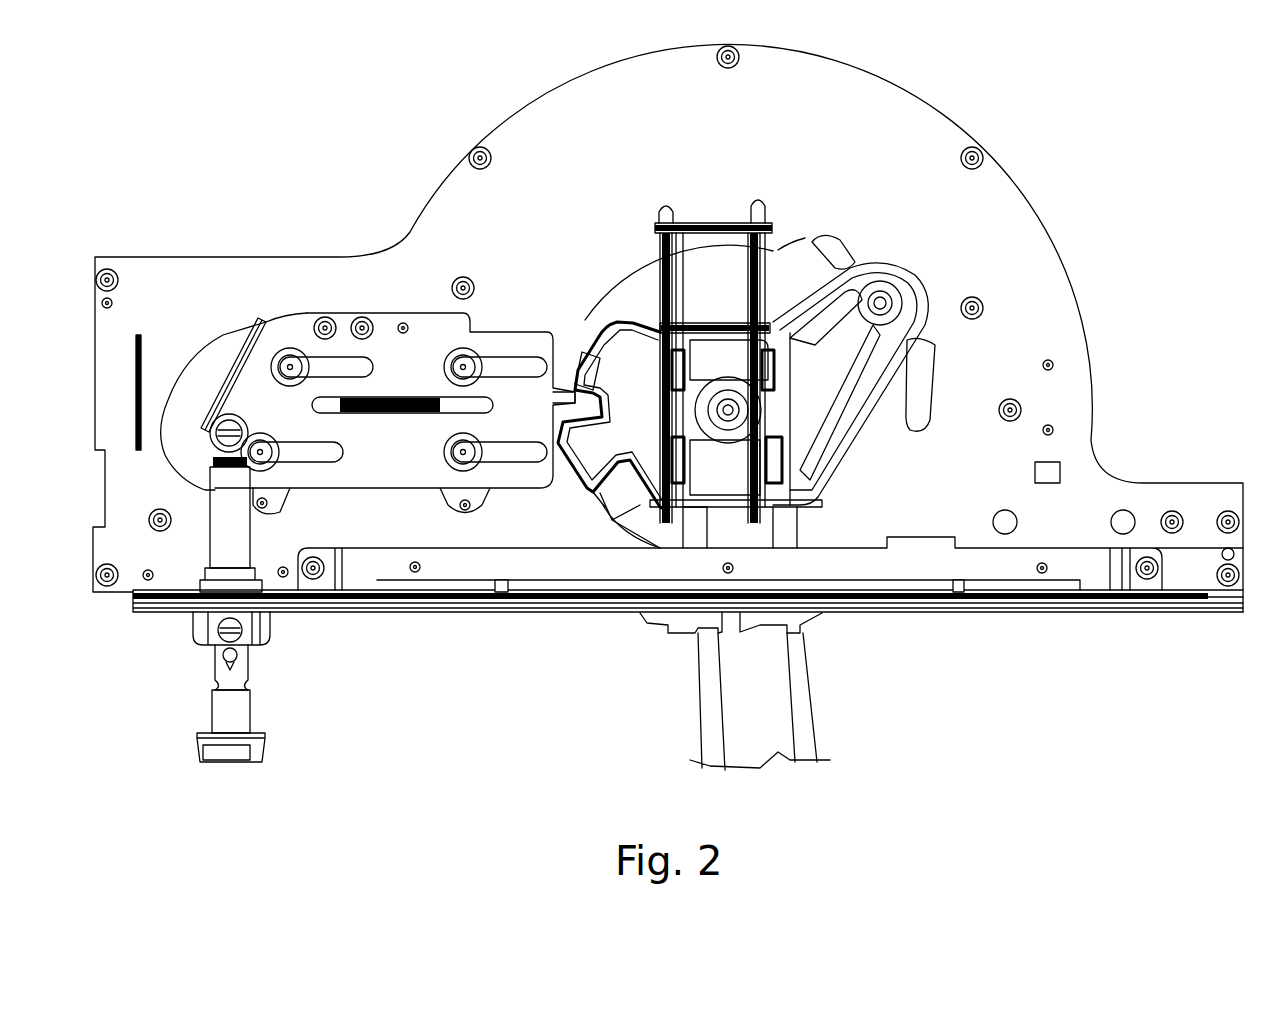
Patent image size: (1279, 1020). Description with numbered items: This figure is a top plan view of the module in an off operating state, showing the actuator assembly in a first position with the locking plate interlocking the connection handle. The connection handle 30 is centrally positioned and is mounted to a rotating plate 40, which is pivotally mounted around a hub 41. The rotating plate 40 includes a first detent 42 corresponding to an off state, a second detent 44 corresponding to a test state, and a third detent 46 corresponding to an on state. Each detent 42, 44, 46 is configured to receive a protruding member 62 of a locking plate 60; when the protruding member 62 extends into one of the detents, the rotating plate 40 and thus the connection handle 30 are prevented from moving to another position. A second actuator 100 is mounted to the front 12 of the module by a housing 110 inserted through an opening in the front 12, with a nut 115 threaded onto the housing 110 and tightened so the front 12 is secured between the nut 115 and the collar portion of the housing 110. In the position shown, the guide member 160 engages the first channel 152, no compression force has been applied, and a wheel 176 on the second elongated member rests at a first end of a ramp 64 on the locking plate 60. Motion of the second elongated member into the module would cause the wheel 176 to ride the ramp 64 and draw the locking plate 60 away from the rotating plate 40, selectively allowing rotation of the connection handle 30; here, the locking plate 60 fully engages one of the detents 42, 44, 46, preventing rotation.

The front 12 is at (387, 612).
The connection handle 30 is at (705, 727).
The rotating plate 40 is at (625, 320).
The hub 41 is at (728, 375).
The first detent 42 is at (600, 402).
The second detent 44 is at (578, 360).
The third detent 46 is at (600, 502).
The locking plate 60 is at (420, 318).
The protruding member 62 is at (575, 400).
The ramp 64 is at (235, 365).
The second actuator 100 is at (245, 762).
The housing 110 is at (213, 512).
The nut 115 is at (200, 590).
The first channel 152 is at (225, 672).
The guide member 160 is at (200, 628).
The wheel 176 is at (240, 420).